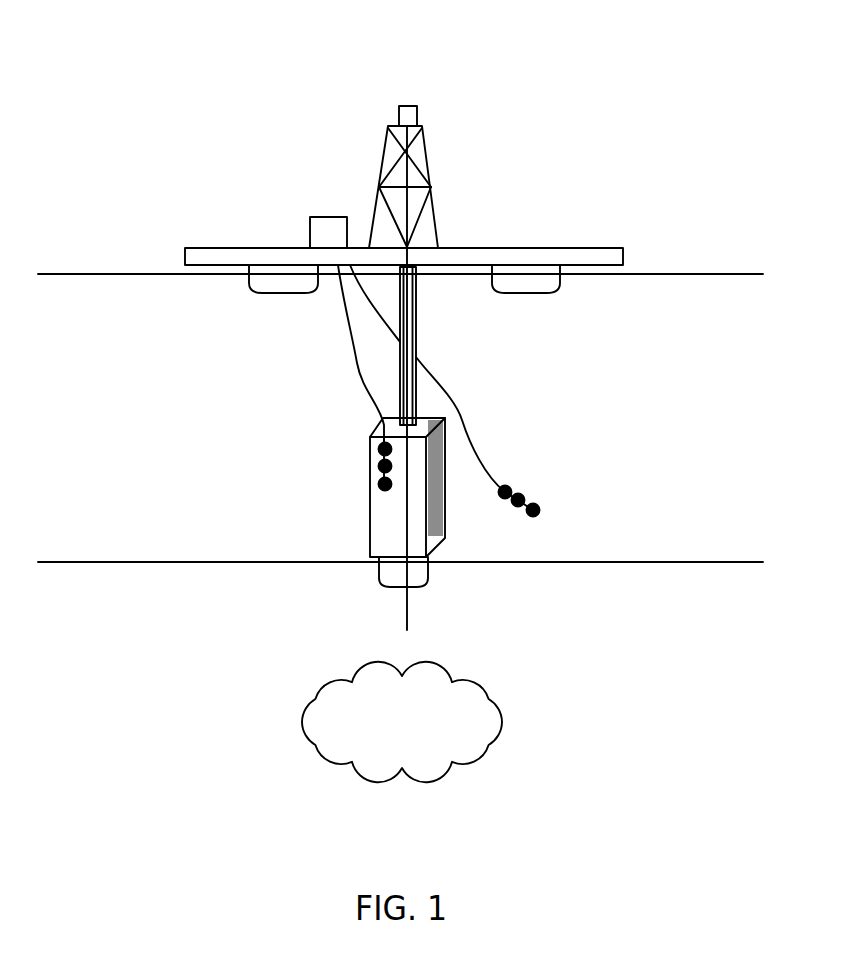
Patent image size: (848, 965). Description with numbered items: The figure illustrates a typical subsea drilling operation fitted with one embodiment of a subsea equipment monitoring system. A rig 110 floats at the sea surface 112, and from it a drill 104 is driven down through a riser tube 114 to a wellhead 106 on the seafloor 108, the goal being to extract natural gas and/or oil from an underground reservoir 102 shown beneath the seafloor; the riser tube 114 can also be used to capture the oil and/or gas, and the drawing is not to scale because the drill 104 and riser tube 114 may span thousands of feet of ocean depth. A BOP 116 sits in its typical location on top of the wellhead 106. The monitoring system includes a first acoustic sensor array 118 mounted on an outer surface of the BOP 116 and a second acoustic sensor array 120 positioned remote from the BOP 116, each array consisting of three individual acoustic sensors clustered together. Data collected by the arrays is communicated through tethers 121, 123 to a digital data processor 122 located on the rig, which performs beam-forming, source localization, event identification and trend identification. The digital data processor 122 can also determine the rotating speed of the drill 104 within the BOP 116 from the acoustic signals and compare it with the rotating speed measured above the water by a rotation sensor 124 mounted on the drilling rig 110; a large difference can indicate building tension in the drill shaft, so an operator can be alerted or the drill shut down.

The underground reservoir 102 is at (497, 735).
The drill 104 is at (405, 607).
The wellhead 106 is at (428, 573).
The seafloor 108 is at (657, 561).
The rig 110 is at (580, 256).
The sea surface 112 is at (680, 274).
The riser tube 114 is at (417, 318).
The BOP 116 is at (356, 522).
The first acoustic sensor array 118 is at (380, 465).
The second acoustic sensor array 120 is at (523, 499).
The tether 121 is at (358, 363).
The digital data processor 122 is at (320, 229).
The tether 123 is at (467, 427).
The rotation sensor 124 is at (409, 112).